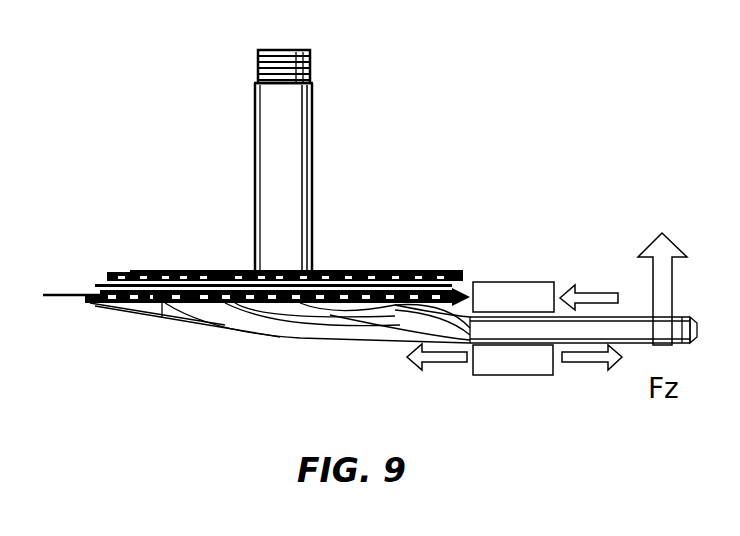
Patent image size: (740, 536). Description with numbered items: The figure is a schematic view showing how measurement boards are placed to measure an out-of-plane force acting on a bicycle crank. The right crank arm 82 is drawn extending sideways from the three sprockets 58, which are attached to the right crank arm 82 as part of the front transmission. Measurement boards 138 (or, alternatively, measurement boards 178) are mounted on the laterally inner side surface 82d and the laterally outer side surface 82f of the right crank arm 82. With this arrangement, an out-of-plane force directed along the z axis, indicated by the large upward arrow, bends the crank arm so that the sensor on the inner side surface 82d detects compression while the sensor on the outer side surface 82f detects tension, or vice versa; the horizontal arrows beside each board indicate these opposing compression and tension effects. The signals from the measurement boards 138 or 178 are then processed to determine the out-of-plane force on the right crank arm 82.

The sprockets 58 is at (100, 264).
The right crank arm 82 is at (382, 345).
The laterally inner side surface 82d is at (633, 313).
The laterally outer side surface 82f is at (633, 345).
The measurement board 138 is at (503, 330).
The measurement board 178 is at (512, 296).